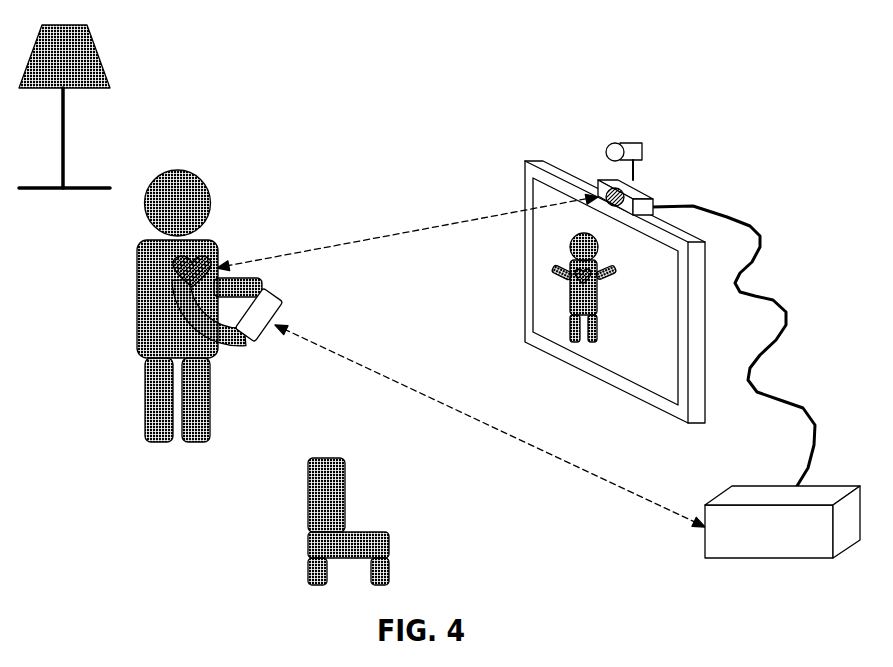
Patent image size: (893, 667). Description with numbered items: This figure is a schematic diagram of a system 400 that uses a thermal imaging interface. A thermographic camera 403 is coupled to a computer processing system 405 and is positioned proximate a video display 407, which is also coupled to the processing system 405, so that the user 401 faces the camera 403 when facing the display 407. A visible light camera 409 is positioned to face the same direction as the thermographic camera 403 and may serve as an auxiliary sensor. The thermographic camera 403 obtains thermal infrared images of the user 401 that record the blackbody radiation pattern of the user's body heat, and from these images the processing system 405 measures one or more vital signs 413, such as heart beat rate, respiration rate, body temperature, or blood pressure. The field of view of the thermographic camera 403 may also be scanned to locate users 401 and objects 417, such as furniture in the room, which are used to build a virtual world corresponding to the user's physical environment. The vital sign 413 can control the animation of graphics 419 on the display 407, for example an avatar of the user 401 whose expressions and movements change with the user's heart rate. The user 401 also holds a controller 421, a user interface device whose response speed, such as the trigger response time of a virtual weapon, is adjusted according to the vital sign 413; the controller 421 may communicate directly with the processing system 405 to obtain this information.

The system 400 is at (741, 108).
The user 401 is at (137, 250).
The thermographic camera 403 is at (646, 198).
The computer processing system 405 is at (782, 501).
The video display 407 is at (585, 292).
The visible light camera 409 is at (621, 136).
The vital sign 413 is at (175, 270).
The objects 417 is at (100, 52).
The graphics 419 is at (600, 298).
The controller 421 is at (287, 306).